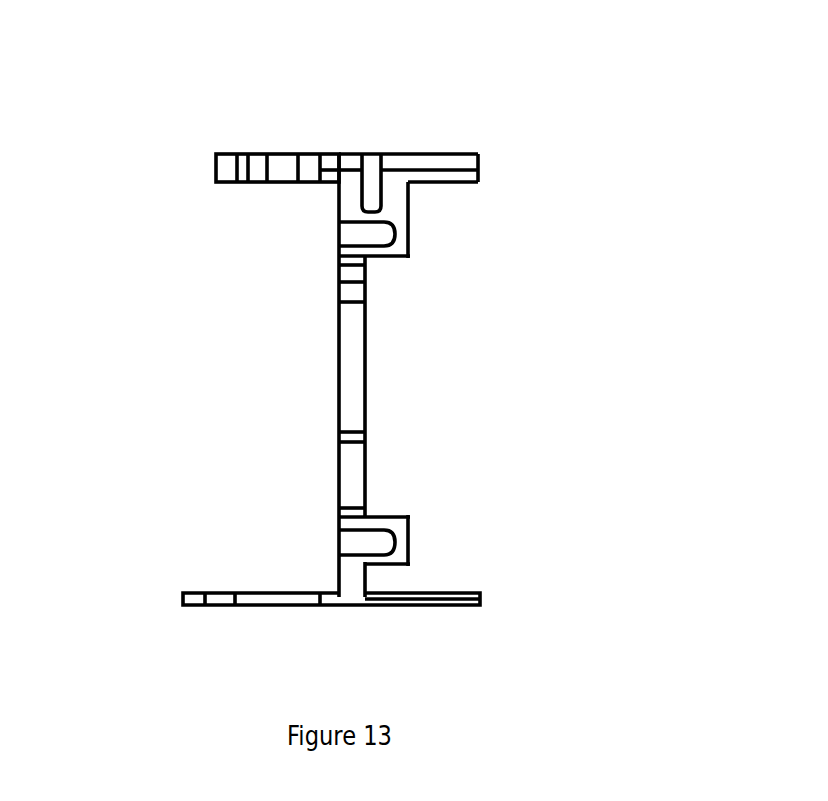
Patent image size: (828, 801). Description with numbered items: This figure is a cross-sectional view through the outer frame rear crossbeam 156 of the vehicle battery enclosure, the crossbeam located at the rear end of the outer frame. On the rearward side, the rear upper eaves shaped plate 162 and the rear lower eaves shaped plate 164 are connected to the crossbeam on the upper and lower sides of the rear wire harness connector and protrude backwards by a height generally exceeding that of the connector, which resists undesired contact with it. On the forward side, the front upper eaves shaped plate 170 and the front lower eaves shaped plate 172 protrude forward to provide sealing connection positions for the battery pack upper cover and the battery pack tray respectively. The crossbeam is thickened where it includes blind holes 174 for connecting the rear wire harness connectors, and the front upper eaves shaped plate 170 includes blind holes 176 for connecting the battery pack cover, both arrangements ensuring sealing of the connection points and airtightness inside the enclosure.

The outer frame rear crossbeam 156 is at (580, 143).
The rear upper eaves shaped plate 162 is at (223, 170).
The rear lower eaves shaped plate 164 is at (183, 597).
The front upper eaves shaped plate 170 is at (441, 162).
The front lower eaves shaped plate 172 is at (481, 597).
The blind holes for connecting the rear wire harness connectors 174 is at (390, 237).
The blind holes for connecting the battery pack cover 176 is at (373, 165).